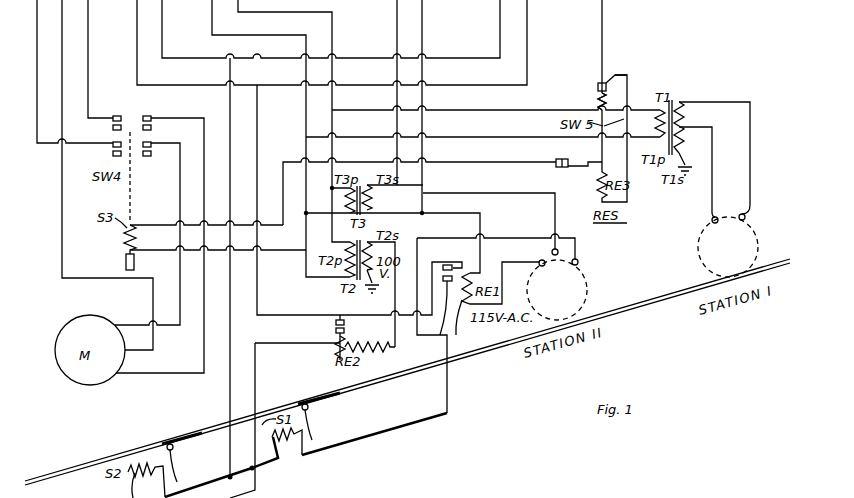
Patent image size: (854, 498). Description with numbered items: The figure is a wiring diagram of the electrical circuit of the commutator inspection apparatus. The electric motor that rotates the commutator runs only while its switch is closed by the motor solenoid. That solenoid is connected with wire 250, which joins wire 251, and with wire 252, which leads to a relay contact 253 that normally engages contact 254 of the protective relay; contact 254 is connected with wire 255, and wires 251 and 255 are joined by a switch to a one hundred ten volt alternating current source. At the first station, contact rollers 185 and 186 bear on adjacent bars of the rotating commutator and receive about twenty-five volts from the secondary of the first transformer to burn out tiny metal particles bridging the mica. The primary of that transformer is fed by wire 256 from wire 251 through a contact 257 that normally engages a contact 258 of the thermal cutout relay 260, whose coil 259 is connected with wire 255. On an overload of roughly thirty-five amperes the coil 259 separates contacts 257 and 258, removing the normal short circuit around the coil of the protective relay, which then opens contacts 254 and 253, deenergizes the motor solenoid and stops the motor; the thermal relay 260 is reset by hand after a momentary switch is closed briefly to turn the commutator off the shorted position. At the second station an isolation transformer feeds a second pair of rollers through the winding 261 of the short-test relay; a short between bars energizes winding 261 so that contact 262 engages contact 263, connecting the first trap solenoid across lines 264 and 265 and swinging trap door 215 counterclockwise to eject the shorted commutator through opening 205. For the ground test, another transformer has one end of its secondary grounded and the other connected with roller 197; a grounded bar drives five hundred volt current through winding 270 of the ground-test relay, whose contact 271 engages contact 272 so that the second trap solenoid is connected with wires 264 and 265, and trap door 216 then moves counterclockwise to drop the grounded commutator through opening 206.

The wire 251 is at (214, 25).
The line 264 is at (204, 51).
The line 265 is at (208, 76).
The wire 255 is at (332, 43).
The wire 256 is at (487, 140).
The wire 252 is at (283, 211).
The wire 250 is at (281, 251).
The relay contact 253 is at (570, 157).
The relay contact 254 is at (560, 168).
The contact 257 is at (604, 82).
The contact 258 is at (598, 87).
The coil 259 is at (598, 103).
The thermal cutout relay 260 is at (667, 77).
The contact 262 is at (448, 265).
The contact 263 is at (447, 325).
The winding 261 is at (460, 323).
The winding 270 is at (382, 348).
The contact 271 is at (335, 326).
The contact 272 is at (335, 332).
The contact roller 185 is at (551, 253).
The contact roller 186 is at (712, 221).
The contact roller 197 is at (578, 262).
The opening 205 is at (341, 395).
The opening 206 is at (201, 433).
The trap door 215 is at (319, 402).
The trap door 216 is at (187, 442).